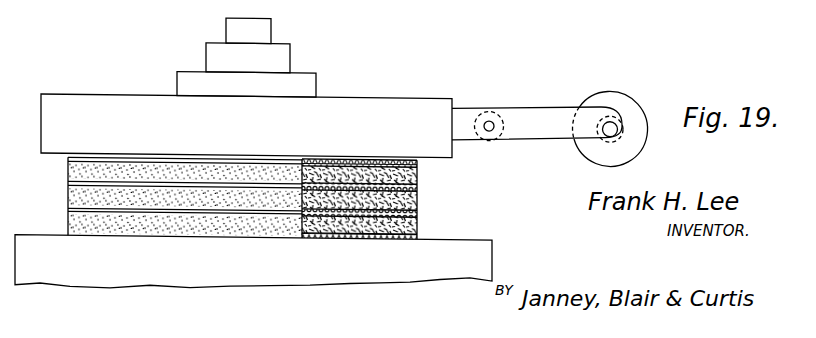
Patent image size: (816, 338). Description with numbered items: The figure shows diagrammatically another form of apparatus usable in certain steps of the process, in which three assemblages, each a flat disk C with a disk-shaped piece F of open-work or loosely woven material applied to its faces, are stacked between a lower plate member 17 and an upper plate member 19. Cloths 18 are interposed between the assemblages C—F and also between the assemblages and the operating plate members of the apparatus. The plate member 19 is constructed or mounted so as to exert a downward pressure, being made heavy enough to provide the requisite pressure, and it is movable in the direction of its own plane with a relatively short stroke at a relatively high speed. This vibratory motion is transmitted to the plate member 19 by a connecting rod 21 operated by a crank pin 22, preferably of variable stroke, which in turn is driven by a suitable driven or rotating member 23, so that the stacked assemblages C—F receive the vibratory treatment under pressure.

The plate member 17 is at (318, 278).
The cloths 18 is at (282, 200).
The plate member 19 is at (391, 73).
The connecting rod 21 is at (528, 109).
The crank pin 22 is at (606, 115).
The driven or rotating member 23 is at (632, 92).
The disk-shaped piece of open-work or loosely woven material F is at (417, 159).
The flat disk C is at (417, 173).